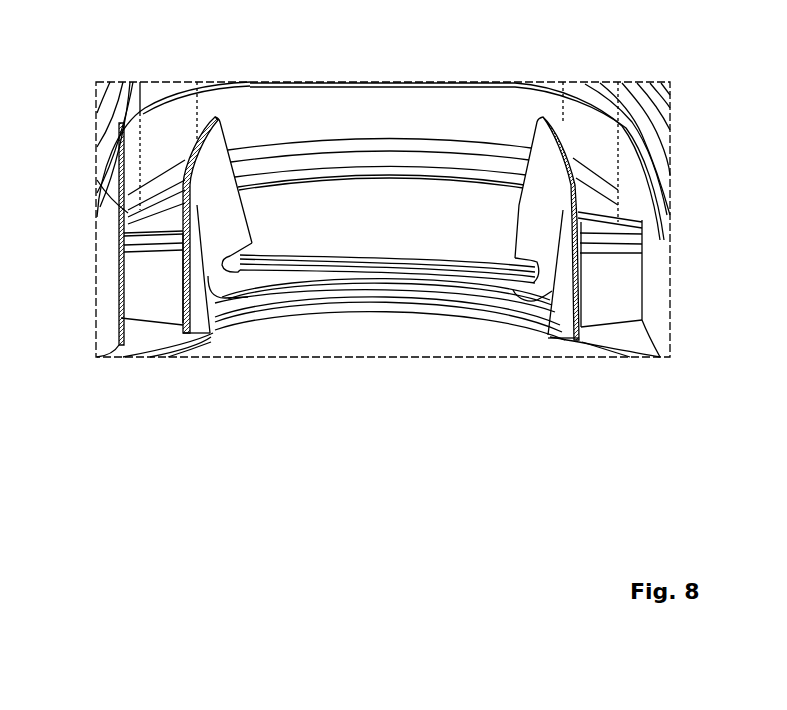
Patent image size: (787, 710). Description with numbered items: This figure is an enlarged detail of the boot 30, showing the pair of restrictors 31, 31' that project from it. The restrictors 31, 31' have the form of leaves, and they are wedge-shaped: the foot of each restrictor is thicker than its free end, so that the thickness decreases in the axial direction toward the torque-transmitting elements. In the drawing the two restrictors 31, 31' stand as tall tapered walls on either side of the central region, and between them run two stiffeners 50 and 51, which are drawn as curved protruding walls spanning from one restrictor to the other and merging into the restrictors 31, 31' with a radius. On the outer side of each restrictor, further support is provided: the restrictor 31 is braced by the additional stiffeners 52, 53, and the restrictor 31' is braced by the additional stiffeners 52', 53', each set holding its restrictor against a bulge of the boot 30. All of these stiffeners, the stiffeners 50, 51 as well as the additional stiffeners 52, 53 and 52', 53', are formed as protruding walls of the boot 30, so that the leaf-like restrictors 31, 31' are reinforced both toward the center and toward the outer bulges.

The boot 30 is at (594, 112).
The restrictor 31 is at (519, 216).
The restrictor 31' is at (249, 216).
The stiffener 50 is at (398, 290).
The stiffener 51 is at (398, 254).
The additional stiffener 52 is at (670, 201).
The additional stiffener 52' is at (102, 202).
The additional stiffener 53 is at (657, 274).
The additional stiffener 53' is at (101, 279).